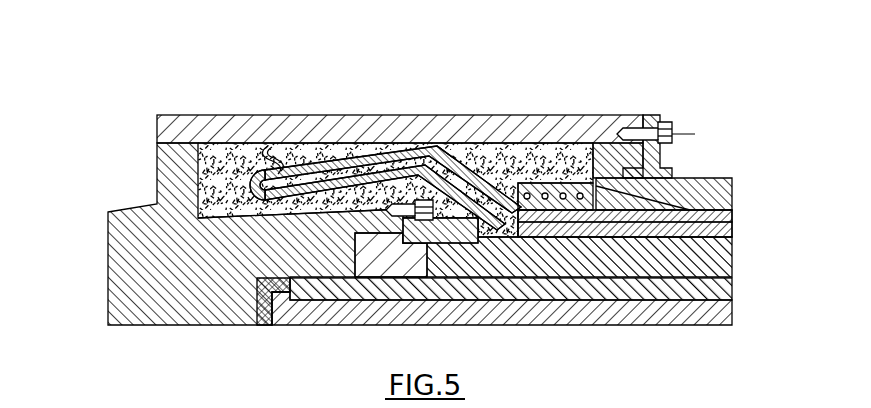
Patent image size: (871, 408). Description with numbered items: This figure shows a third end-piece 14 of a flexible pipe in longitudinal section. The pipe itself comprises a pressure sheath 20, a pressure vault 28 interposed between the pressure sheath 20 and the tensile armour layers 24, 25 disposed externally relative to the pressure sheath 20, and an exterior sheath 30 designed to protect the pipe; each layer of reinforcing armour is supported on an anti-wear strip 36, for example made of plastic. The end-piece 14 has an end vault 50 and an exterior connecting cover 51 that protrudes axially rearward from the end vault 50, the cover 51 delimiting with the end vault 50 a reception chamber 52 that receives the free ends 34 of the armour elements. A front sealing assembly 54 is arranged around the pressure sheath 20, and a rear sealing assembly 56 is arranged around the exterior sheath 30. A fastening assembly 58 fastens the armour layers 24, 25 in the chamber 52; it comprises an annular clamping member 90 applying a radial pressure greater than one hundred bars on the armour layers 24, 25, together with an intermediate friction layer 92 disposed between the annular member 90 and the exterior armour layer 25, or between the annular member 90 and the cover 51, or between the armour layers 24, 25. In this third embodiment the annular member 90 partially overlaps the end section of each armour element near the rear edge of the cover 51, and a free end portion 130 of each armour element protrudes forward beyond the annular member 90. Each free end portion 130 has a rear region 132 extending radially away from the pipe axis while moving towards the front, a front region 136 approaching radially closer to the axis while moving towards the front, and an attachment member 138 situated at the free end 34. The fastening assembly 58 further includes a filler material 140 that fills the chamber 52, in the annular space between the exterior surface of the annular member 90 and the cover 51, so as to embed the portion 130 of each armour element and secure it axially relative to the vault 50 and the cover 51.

The end-piece 14 is at (777, 106).
The pressure sheath 20 is at (730, 288).
The tensile armour layer 24 is at (735, 228).
The tensile armour layer 25 is at (734, 214).
The pressure vault 28 is at (633, 265).
The exterior sheath 30 is at (730, 210).
The free end 34 is at (261, 170).
The anti-wear strip 36 is at (712, 200).
The end vault 50 is at (118, 256).
The exterior connecting cover 51 is at (400, 115).
The reception chamber 52 is at (207, 220).
The front sealing assembly 54 is at (370, 282).
The rear sealing assembly 56 is at (673, 122).
The fastening assembly 58 is at (575, 163).
The annular clamping member 90 is at (540, 182).
The intermediate friction layer 92 is at (553, 210).
The free end portion 130 is at (432, 145).
The rear region 132 is at (468, 165).
The front region 136 is at (348, 162).
The attachment member 138 is at (270, 147).
The filler material 140 is at (198, 172).